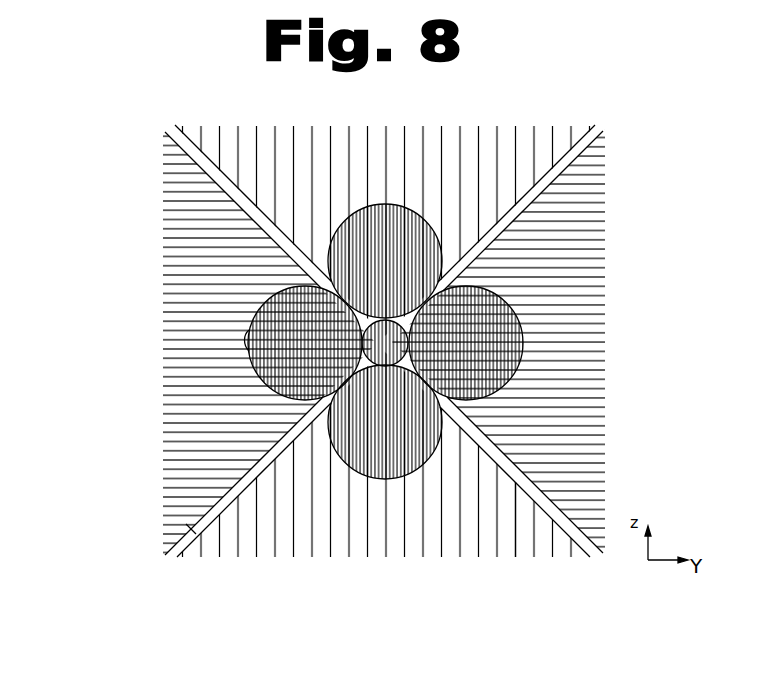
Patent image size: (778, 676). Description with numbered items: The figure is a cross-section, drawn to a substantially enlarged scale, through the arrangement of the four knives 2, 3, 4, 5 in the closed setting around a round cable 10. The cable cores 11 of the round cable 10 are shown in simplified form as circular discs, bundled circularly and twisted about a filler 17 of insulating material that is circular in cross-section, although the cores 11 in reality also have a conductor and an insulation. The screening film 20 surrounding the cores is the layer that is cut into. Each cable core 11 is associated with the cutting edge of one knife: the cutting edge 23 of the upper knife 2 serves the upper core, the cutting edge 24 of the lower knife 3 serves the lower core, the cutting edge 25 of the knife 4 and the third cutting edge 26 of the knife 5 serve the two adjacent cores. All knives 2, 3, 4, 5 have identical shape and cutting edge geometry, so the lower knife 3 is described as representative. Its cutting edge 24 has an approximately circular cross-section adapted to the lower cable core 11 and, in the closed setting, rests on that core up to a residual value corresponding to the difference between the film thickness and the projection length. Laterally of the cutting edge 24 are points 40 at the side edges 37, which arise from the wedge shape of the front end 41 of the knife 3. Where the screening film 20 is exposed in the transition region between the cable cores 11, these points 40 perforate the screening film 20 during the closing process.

The upper knife 2 is at (428, 140).
The lower knife 3 is at (393, 537).
The knife 4 is at (182, 348).
The knife 5 is at (587, 335).
The round cable 10 is at (350, 227).
The cable cores 11 is at (287, 372).
The filler 17 is at (384, 350).
The screening film 20 is at (300, 283).
The cutting edge 23 is at (381, 203).
The cutting edge 24 is at (413, 475).
The cutting edge 25 is at (247, 335).
The third cutting edge 26 is at (522, 352).
The side edges 37 is at (185, 522).
The points 40 is at (290, 395).
The front end 41 is at (503, 513).